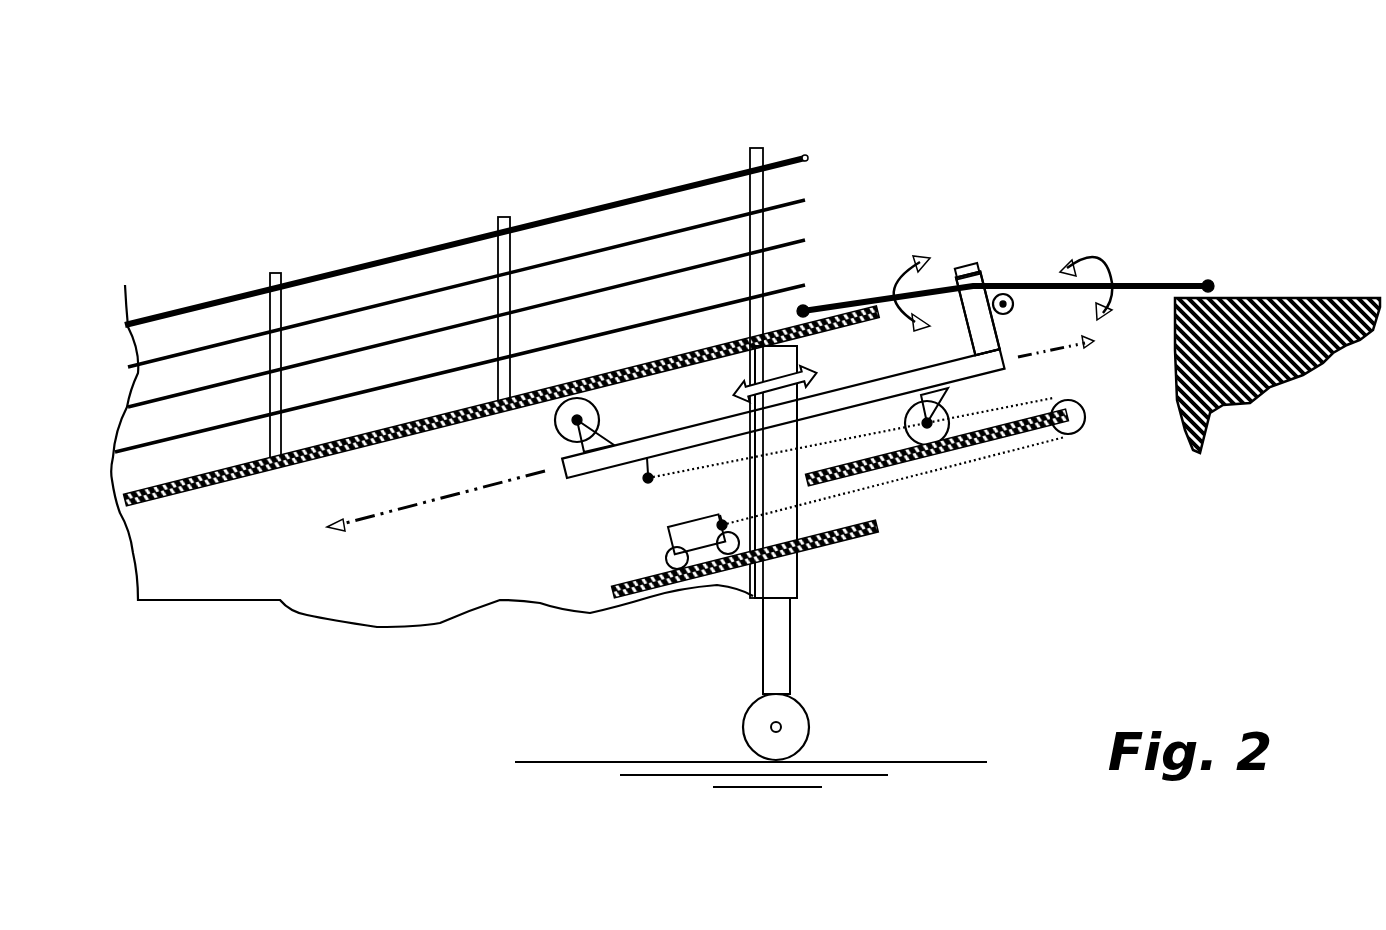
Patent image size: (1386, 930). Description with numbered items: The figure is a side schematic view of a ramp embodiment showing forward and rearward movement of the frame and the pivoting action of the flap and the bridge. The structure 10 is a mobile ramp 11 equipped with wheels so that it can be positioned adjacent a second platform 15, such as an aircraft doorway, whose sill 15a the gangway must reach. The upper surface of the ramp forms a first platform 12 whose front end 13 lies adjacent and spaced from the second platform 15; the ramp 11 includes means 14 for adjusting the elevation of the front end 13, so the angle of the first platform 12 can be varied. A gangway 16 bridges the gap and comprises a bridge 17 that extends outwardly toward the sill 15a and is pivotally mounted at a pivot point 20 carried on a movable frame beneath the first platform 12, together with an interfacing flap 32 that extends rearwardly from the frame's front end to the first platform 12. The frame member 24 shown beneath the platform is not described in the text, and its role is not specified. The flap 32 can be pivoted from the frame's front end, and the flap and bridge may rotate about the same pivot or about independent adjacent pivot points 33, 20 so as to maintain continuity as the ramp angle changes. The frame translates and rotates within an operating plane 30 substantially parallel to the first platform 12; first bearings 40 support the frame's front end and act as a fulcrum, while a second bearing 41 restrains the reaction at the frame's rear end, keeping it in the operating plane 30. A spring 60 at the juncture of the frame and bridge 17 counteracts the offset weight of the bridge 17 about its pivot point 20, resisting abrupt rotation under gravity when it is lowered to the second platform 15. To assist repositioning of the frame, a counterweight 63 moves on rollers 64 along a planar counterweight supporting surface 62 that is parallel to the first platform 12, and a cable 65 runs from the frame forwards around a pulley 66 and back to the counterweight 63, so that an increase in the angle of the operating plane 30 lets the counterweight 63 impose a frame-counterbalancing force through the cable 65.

The structure 10 is at (308, 159).
The mobile ramp 11 is at (205, 545).
The first platform 12 is at (668, 348).
The front end of first platform 13 is at (832, 300).
The elevation adjusting means 14 is at (787, 657).
The second platform 15 is at (1340, 298).
The sill 15a is at (1172, 305).
The gangway 16 is at (1200, 130).
The bridge 17 is at (1127, 292).
The pivot point 20 is at (978, 314).
The ramp platform 24 is at (565, 472).
The operating plane 30 is at (422, 507).
The interfacing flap 32 is at (838, 305).
The pivot point of interfacing flap 33 is at (960, 277).
The first bearing 40 is at (935, 437).
The second bearing 41 is at (572, 433).
The spring 60 is at (1010, 313).
The counterweight supporting surface 62 is at (620, 585).
The counterweight 63 is at (707, 577).
The rollers 64 is at (670, 540).
The cable 65 is at (905, 478).
The pulley 66 is at (1082, 420).